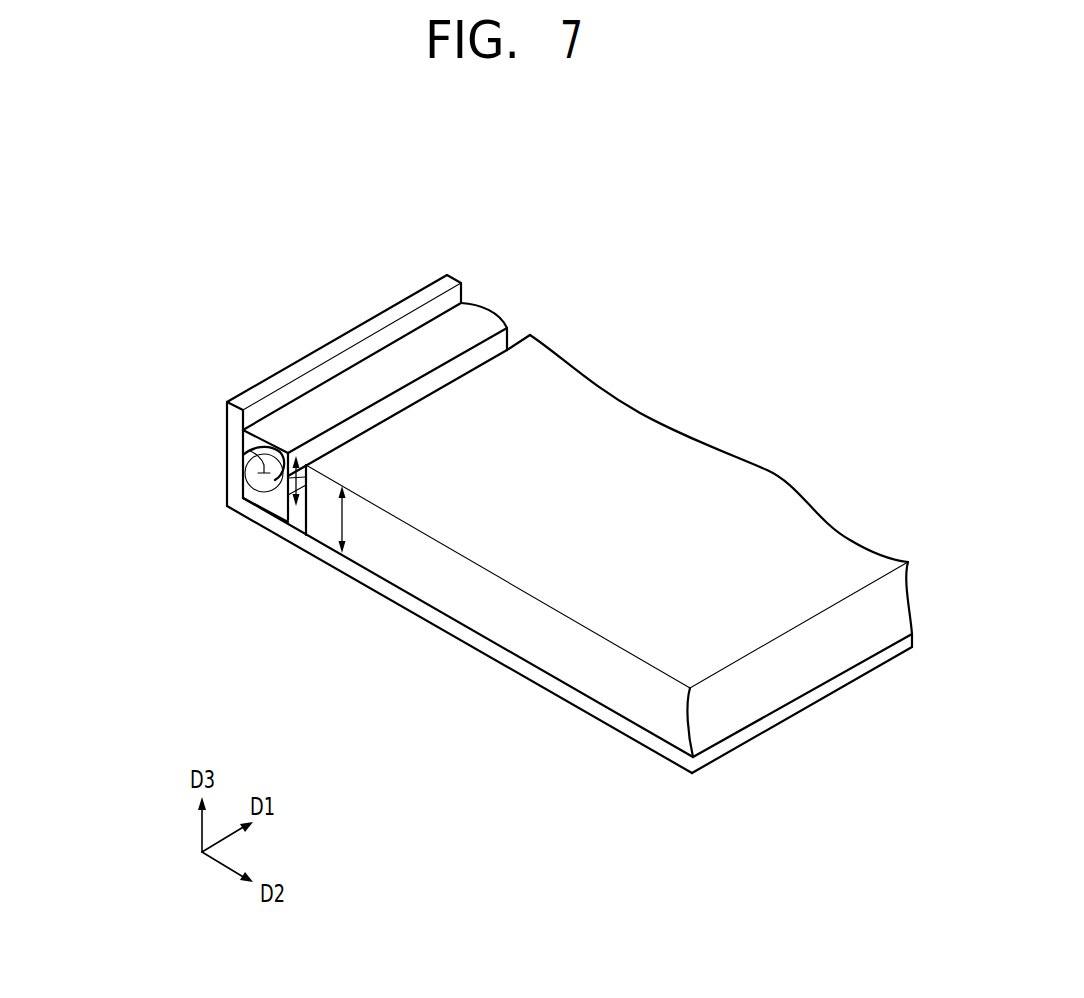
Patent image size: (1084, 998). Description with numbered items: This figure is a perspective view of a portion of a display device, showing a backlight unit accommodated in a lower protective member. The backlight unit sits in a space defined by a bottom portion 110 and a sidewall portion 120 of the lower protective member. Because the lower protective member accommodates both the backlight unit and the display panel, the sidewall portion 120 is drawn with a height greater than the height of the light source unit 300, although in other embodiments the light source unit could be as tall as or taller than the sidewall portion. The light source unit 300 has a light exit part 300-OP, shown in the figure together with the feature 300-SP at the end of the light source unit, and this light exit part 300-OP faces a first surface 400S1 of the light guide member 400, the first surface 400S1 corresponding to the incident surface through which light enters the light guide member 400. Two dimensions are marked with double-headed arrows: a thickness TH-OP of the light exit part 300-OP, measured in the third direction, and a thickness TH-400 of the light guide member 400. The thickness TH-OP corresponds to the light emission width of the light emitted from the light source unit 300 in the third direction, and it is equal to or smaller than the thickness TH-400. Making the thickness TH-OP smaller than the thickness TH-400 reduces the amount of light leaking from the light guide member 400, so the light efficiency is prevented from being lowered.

The bottom portion 110 is at (518, 662).
The sidewall portion 120 is at (402, 312).
The light source unit 300 is at (380, 358).
The light exit part 300-OP is at (280, 500).
The slot in opening 300-SP is at (243, 455).
The light guide member 400 is at (722, 470).
The first surface 400S1 is at (508, 345).
The thickness of the light exit part TH-OP is at (310, 480).
The thickness of the light guide member TH-400 is at (342, 525).